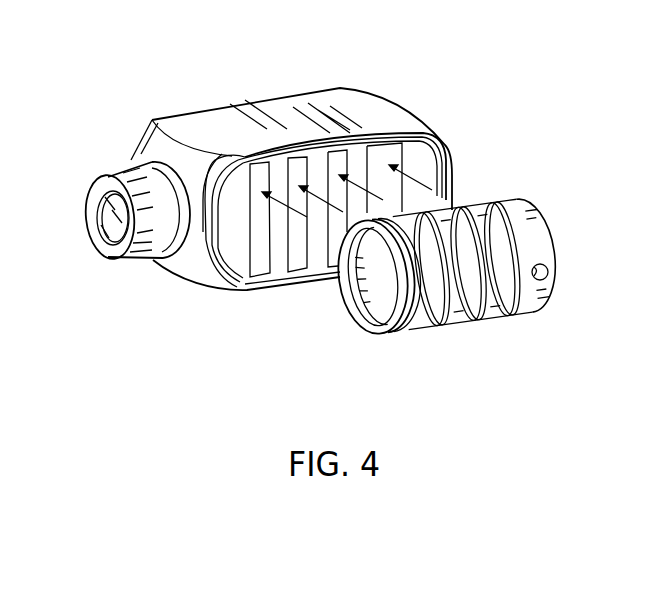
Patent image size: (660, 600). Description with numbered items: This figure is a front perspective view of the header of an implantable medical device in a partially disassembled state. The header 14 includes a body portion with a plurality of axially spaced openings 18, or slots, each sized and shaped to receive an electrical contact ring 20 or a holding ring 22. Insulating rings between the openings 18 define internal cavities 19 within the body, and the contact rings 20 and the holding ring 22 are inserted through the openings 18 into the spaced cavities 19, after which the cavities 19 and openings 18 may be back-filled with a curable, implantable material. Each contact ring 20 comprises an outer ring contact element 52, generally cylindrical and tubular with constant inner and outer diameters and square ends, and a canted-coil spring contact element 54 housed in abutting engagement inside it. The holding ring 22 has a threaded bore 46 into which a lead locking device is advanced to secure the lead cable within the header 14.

The header 14 is at (328, 108).
The openings 18 is at (262, 276).
The cavities 19 is at (387, 155).
The contact rings 20 is at (410, 317).
The holding ring 22 is at (528, 311).
The threaded bore 46 is at (548, 272).
The outer ring contact element 52 is at (378, 333).
The canted-coil spring contact element 54 is at (372, 308).